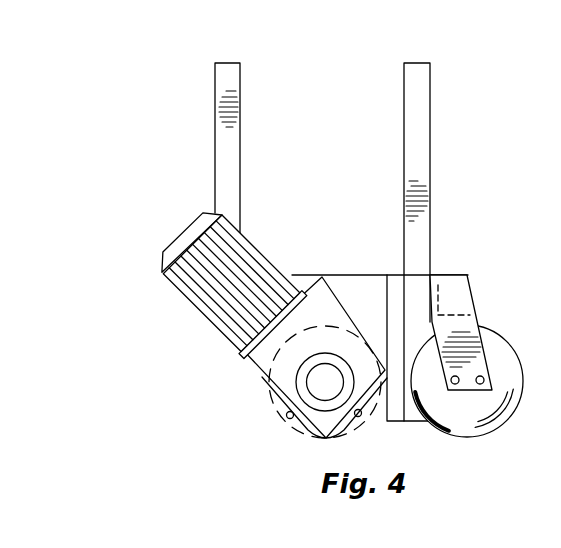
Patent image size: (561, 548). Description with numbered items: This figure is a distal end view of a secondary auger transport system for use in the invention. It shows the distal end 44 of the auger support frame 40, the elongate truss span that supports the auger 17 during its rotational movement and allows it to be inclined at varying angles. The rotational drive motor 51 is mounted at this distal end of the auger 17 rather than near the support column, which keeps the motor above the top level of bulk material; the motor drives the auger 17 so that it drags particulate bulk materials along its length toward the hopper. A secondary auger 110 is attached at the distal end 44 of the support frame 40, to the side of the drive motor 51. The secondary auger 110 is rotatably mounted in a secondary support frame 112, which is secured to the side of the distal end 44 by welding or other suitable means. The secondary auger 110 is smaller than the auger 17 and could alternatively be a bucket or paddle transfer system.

The auger support frame 40 is at (423, 115).
The distal end 44 is at (430, 270).
The rotational drive motor 51 is at (254, 234).
The auger 17 is at (274, 407).
The secondary auger 110 is at (500, 352).
The secondary support frame 112 is at (460, 305).